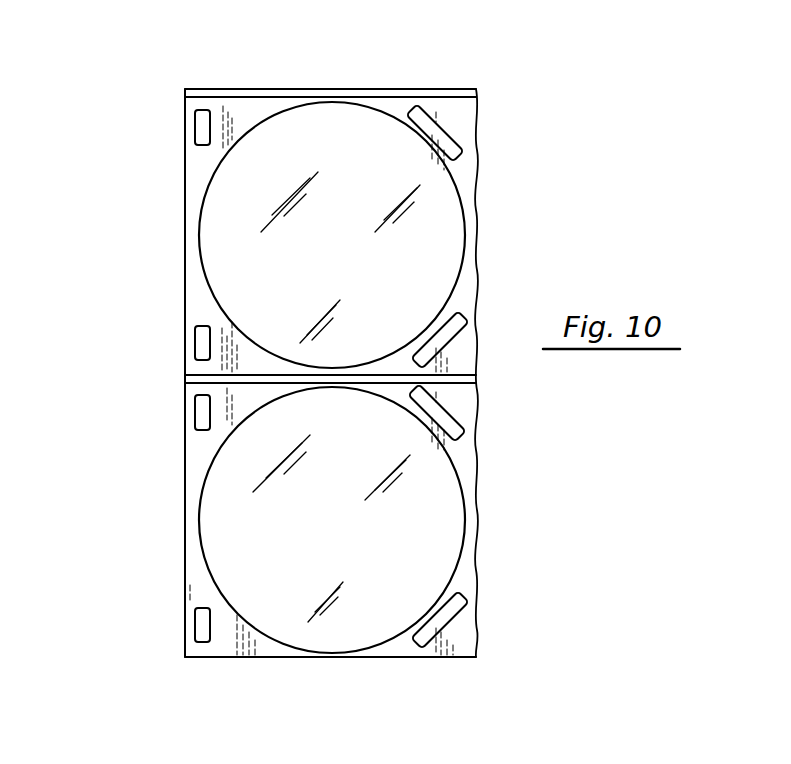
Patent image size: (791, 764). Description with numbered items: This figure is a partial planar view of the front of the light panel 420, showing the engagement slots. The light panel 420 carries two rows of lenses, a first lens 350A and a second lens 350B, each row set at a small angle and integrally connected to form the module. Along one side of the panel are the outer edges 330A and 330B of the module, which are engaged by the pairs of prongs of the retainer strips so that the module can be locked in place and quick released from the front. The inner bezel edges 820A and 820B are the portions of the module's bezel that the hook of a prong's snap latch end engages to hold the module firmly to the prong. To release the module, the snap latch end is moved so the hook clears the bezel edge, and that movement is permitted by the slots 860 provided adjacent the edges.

The light panel 420 is at (518, 124).
The inner bezel edge 820A is at (247, 110).
The inner bezel edge 820B is at (227, 636).
The lens 350A is at (370, 265).
The lens 350B is at (370, 543).
The outer edge 330A is at (193, 125).
The outer edge 330B is at (193, 407).
The slot 860 is at (197, 335).